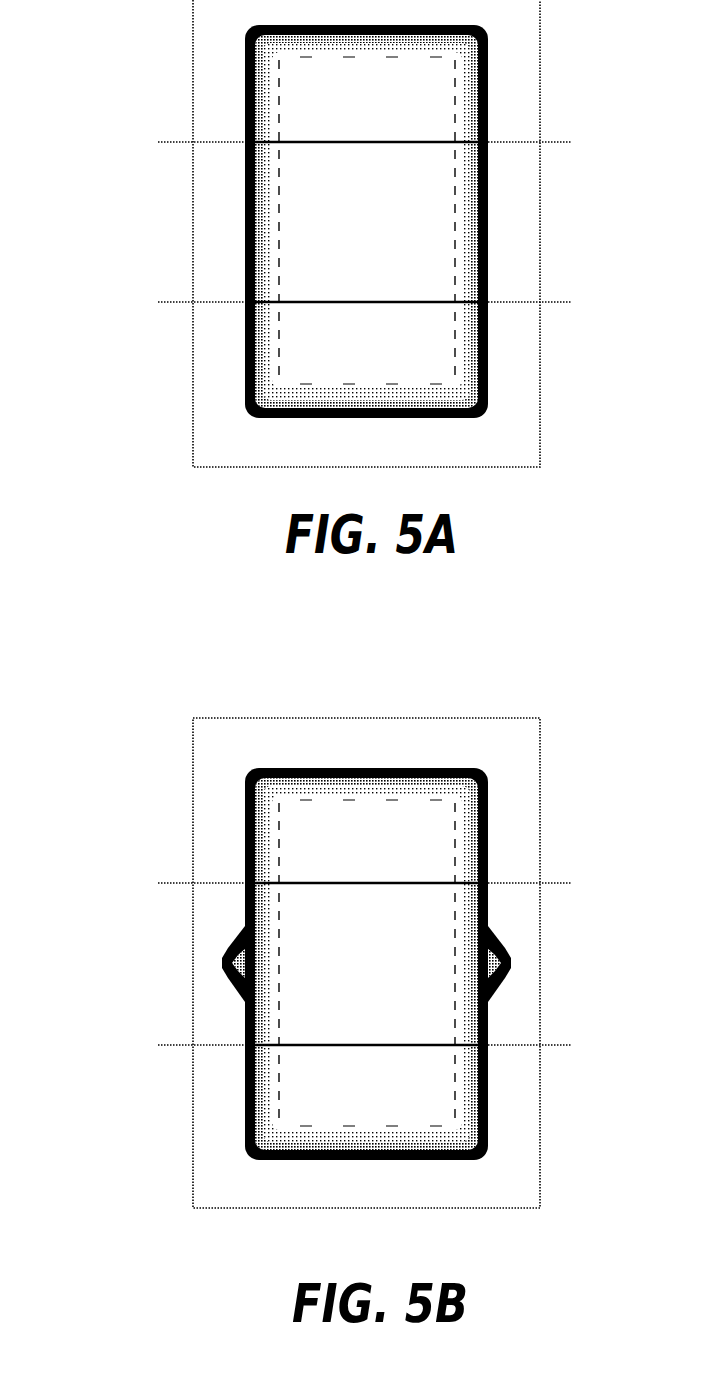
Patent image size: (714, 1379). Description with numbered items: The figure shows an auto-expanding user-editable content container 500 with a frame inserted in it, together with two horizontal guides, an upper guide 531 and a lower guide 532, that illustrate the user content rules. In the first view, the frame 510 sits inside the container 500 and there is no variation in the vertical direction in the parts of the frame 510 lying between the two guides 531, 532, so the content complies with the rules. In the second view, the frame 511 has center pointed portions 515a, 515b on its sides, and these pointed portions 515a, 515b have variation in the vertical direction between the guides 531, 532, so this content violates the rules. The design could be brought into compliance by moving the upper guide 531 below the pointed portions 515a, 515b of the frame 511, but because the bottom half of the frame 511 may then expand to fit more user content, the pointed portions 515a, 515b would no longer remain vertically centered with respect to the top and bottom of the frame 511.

In FIG. 5A, the auto-expanding user-editable content container 500 is at (192, 32).
In FIG. 5B, the auto-expanding user-editable content container 500 is at (177, 772).
In FIG. 5A, the frame 510 is at (488, 206).
In FIG. 5B, the frame 511 is at (476, 830).
In FIG. 5B, the center pointed portion 515a is at (223, 963).
In FIG. 5B, the center pointed portion 515b is at (512, 962).
In FIG. 5A, the upper guide 531 is at (190, 142).
In FIG. 5B, the upper guide 531 is at (170, 868).
In FIG. 5A, the lower guide 532 is at (178, 302).
In FIG. 5B, the lower guide 532 is at (178, 1043).